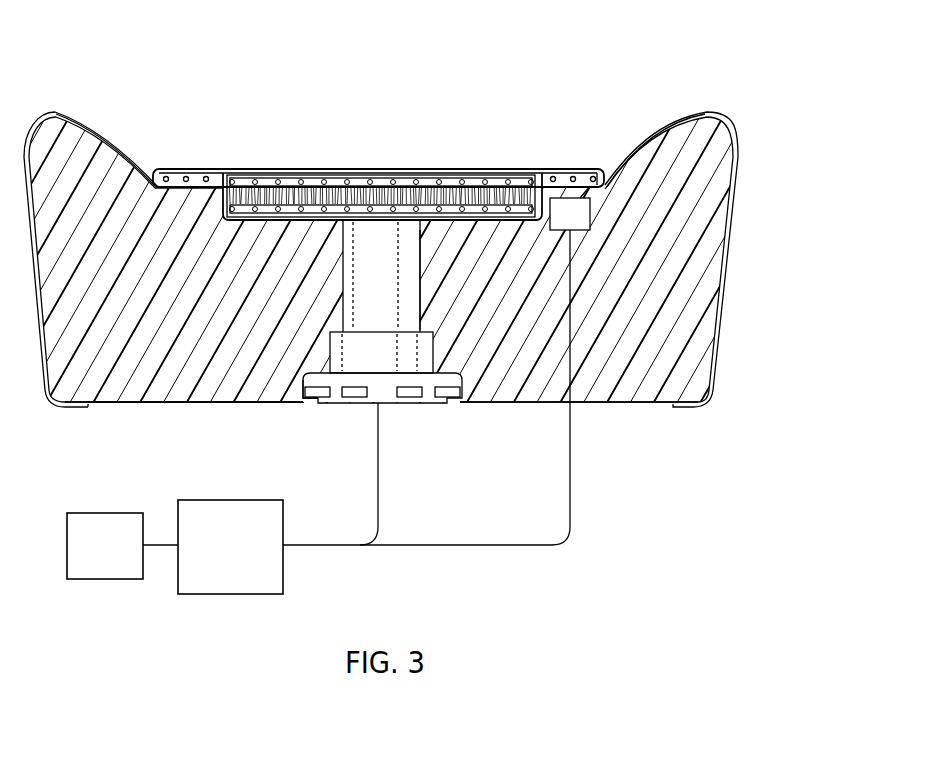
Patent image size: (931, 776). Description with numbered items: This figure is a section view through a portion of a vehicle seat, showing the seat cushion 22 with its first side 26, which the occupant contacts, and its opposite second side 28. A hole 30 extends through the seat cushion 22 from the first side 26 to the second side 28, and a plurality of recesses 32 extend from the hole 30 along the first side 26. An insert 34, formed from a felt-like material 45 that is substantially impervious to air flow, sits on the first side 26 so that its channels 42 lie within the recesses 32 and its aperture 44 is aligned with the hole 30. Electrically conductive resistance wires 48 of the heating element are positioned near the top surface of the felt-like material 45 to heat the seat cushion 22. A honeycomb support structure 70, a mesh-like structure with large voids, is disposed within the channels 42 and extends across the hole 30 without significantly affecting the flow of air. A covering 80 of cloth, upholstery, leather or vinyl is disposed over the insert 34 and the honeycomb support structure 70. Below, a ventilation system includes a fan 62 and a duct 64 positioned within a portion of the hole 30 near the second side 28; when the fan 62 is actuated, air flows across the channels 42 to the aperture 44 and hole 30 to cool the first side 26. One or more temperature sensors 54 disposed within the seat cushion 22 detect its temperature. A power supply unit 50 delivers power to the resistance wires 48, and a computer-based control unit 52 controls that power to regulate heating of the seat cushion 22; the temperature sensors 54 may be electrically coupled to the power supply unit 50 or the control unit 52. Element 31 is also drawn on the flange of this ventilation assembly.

The seat cushion 22 is at (62, 140).
The first side 26 is at (115, 137).
The second side 28 is at (645, 403).
The hole 30 is at (407, 273).
The mounting flange 31 is at (301, 371).
The recesses 32 is at (255, 258).
The insert 34 is at (586, 170).
The channels 42 is at (215, 300).
The aperture 44 is at (388, 221).
The felt-like material 45 is at (180, 172).
The electrically conductive resistance wires 48 is at (210, 168).
The power supply unit 50 is at (100, 580).
The computer-based control unit 52 is at (230, 595).
The temperature sensors 54 is at (436, 365).
The fan 62 is at (387, 394).
The duct 64 is at (380, 364).
The honeycomb support structure 70 is at (502, 170).
The covering 80 is at (641, 141).